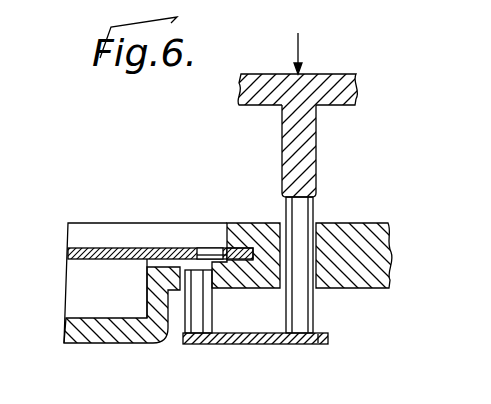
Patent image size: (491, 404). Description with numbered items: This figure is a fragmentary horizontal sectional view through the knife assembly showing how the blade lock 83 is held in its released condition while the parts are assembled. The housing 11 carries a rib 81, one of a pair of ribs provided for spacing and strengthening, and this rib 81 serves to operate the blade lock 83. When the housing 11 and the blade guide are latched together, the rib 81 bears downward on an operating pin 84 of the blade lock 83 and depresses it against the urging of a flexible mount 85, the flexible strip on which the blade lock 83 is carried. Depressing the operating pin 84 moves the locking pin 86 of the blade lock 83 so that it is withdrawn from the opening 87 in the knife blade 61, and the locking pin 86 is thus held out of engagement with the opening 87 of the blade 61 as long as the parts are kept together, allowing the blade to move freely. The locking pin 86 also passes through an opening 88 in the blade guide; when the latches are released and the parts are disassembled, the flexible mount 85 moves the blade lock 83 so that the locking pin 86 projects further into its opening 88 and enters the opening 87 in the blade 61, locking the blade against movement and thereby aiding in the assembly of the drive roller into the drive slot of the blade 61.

The housing 11 is at (320, 74).
The rib 81 is at (304, 137).
The operating pin 84 is at (302, 212).
The opening in the blade guide 88 is at (312, 242).
The knife blade 61 is at (119, 248).
The opening in the knife blade 87 is at (194, 254).
The locking pin 86 is at (203, 302).
The flexible mount 85 is at (240, 345).
The blade lock 83 is at (318, 348).